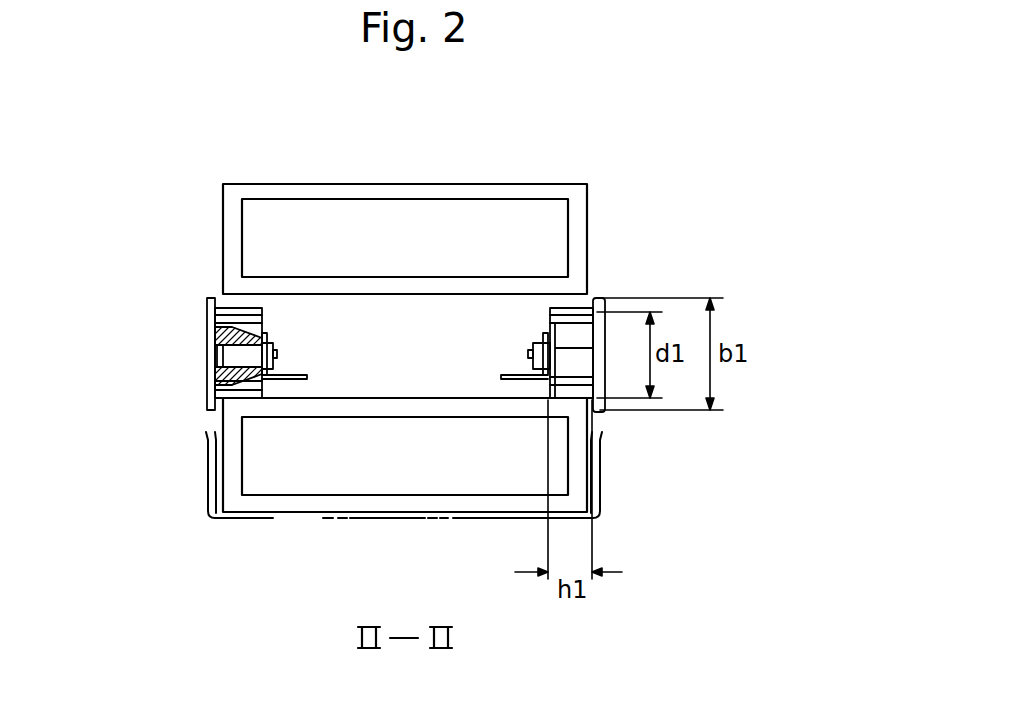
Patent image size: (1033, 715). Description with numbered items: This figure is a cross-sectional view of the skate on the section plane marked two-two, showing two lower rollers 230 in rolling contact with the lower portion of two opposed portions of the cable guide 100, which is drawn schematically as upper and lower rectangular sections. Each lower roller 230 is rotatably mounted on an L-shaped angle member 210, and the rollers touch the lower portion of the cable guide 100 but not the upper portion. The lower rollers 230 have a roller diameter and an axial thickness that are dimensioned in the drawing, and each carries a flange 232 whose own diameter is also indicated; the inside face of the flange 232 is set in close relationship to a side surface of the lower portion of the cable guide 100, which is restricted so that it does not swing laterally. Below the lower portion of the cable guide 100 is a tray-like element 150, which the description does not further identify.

The cable guide 100 is at (430, 192).
The tray 150 is at (208, 498).
The L-shaped angle member 210 is at (293, 379).
The lower roller 230 is at (231, 312).
The flange 232 is at (208, 400).